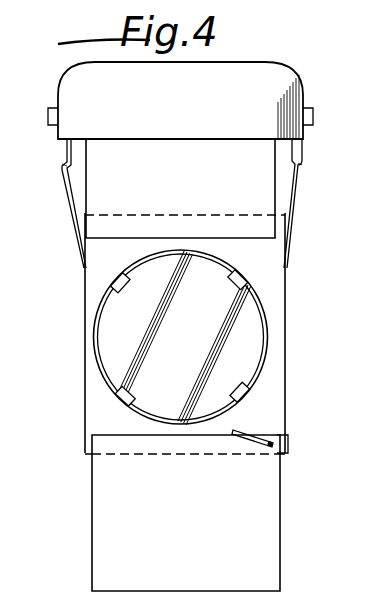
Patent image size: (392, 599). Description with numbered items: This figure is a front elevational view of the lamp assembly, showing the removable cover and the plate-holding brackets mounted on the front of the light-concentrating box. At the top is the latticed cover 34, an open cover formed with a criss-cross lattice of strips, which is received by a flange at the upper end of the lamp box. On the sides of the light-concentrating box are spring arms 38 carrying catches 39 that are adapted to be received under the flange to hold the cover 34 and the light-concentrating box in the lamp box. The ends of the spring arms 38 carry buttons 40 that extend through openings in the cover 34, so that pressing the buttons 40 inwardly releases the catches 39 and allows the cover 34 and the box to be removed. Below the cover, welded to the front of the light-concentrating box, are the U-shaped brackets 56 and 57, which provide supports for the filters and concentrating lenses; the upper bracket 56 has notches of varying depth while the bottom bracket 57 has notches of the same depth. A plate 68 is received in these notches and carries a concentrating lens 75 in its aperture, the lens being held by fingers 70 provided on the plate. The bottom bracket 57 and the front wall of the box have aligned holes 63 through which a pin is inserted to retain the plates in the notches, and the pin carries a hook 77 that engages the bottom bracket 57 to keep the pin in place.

The latticed cover 34 is at (279, 77).
The buttons 40 is at (48, 114).
The spring arms 38 is at (66, 199).
The catches 39 is at (64, 164).
The U-shaped bracket 56 is at (103, 180).
The plate 68 is at (263, 273).
The concentrating lens 75 is at (250, 332).
The fingers 70 is at (116, 280).
The hook 77 is at (236, 432).
The aligned holes 63 is at (288, 438).
The U-shaped bracket 57 is at (110, 516).